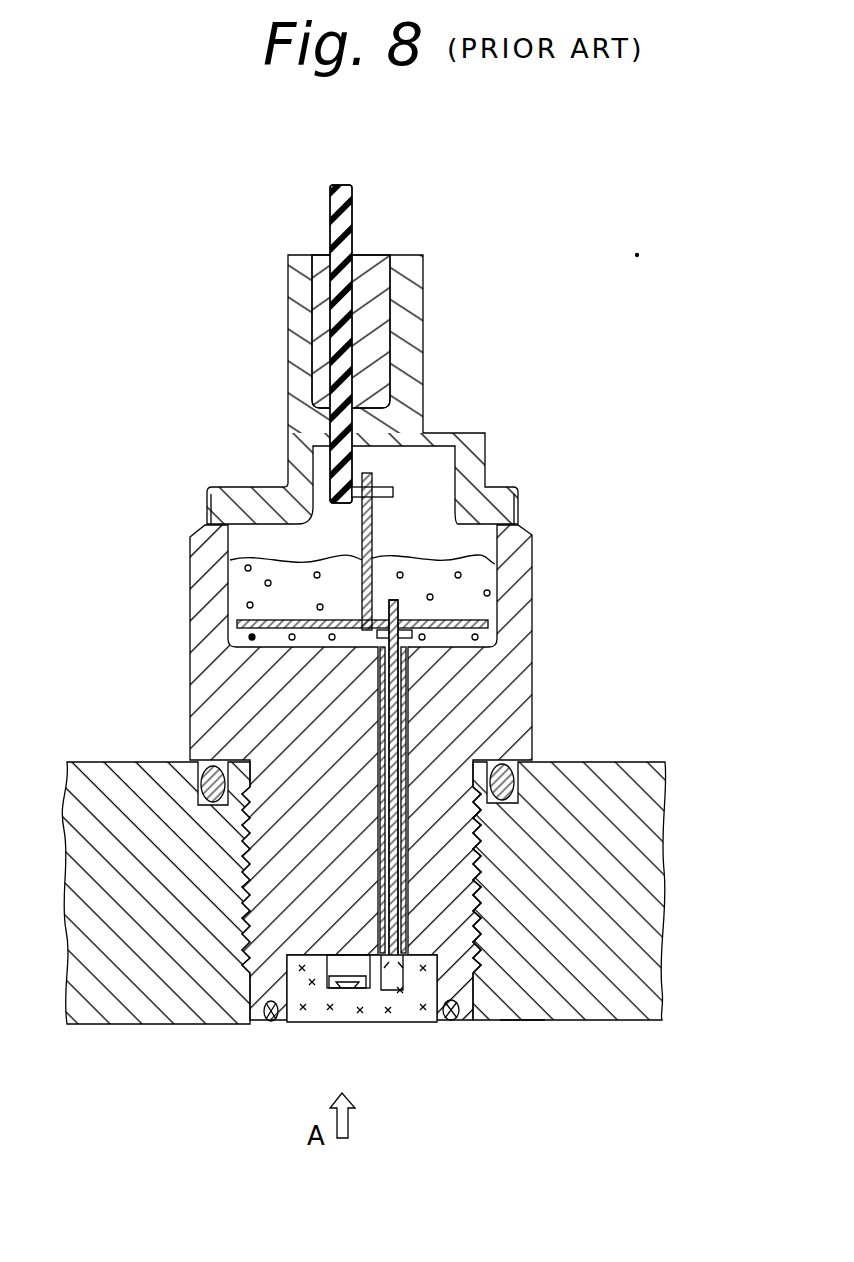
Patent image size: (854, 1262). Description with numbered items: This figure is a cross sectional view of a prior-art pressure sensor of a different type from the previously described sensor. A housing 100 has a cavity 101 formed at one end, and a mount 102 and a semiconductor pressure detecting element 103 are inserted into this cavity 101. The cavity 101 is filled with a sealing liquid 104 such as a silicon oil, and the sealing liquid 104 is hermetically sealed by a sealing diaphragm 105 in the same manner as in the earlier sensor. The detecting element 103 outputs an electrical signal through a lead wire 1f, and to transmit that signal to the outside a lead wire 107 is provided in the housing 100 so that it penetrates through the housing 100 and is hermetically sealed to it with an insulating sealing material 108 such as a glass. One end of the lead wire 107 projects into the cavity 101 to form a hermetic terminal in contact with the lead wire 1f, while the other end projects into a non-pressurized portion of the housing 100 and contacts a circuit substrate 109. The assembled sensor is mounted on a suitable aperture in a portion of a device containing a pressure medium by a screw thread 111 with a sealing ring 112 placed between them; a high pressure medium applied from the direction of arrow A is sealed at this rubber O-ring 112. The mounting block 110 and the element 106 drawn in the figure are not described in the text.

The housing 100 is at (510, 690).
The cavity 101 is at (522, 1022).
The mount 102 is at (326, 962).
The semiconductor pressure detecting element 103 is at (350, 984).
The sealing liquid 104 is at (405, 1005).
The sealing diaphragm 105 is at (434, 1024).
The cavity 106 is at (350, 990).
The lead wire 107 is at (406, 930).
The insulating sealing material 108 is at (407, 893).
The circuit substrate 109 is at (488, 610).
The mounting block 110 is at (655, 787).
The screw thread 111 is at (482, 832).
The sealing ring 112 is at (508, 772).
The lead wire f 1f is at (392, 974).